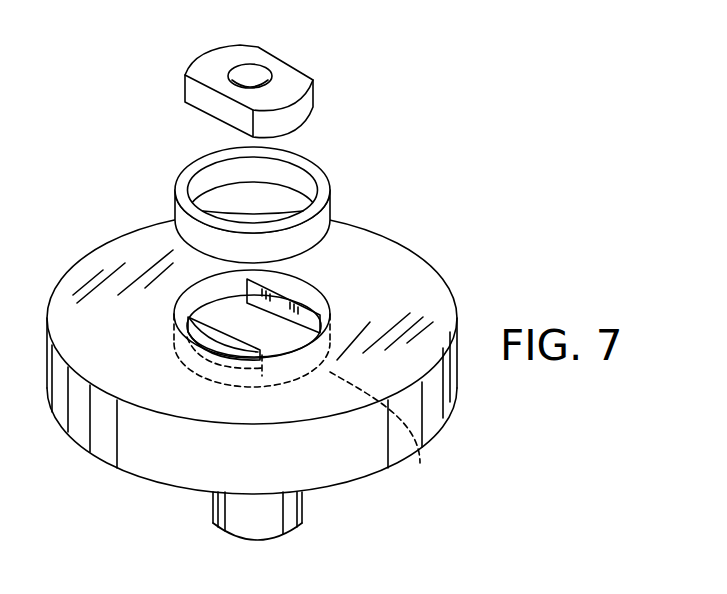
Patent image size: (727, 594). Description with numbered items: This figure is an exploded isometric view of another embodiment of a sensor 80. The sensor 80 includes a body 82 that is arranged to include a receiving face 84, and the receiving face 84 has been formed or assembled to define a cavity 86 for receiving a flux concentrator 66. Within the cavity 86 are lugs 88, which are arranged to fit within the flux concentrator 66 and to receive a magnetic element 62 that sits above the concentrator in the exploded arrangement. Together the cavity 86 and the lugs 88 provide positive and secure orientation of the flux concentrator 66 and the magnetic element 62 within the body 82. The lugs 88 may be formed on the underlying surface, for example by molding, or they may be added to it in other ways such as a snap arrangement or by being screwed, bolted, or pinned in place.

The magnetic element 62 is at (300, 75).
The flux concentrator 66 is at (307, 163).
The sensor 80 is at (302, 289).
The body 82 is at (435, 403).
The receiving face 84 is at (410, 292).
The cavity 86 is at (325, 456).
The lugs 88 is at (207, 330).